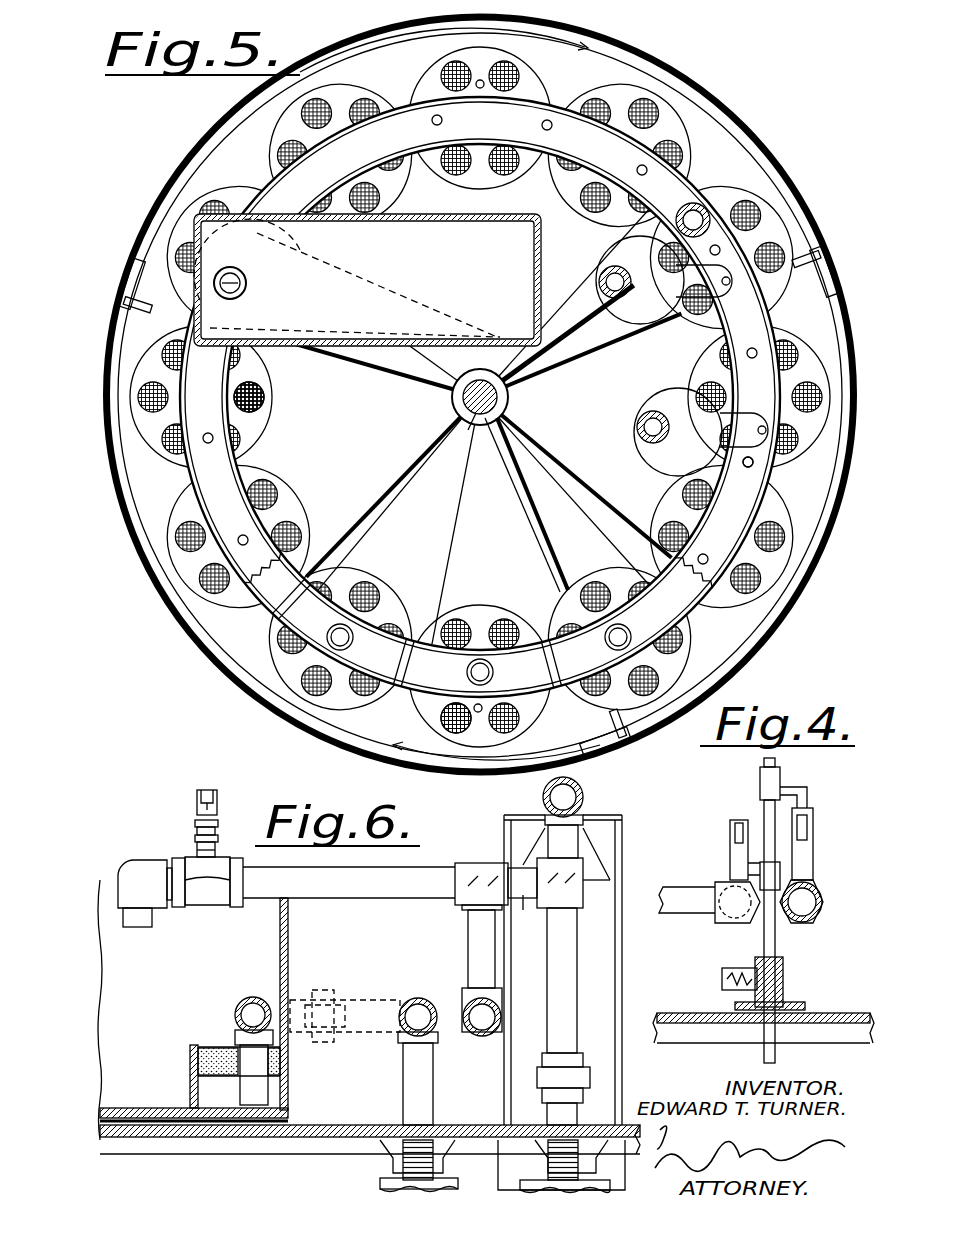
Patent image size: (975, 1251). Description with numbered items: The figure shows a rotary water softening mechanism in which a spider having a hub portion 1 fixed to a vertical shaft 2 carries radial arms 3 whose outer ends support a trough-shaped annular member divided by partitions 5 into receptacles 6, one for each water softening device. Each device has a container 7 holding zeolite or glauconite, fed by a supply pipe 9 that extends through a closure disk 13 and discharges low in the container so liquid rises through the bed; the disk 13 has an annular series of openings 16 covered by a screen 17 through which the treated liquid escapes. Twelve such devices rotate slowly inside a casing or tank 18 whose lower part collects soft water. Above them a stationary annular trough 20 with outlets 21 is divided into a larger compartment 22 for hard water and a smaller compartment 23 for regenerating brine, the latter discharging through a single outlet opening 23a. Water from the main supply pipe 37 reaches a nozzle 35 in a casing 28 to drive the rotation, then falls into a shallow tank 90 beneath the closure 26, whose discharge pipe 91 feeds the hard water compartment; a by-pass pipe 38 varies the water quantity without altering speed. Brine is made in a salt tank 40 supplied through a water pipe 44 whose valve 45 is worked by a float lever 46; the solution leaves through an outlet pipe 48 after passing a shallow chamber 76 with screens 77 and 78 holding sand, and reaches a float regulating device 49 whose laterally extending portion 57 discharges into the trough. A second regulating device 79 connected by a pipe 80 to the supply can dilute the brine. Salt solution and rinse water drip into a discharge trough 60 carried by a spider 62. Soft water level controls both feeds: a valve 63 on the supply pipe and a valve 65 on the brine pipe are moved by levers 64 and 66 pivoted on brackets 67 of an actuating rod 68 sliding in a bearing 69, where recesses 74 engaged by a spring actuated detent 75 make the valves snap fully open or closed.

In FIG. 5, the hub portion 1 is at (467, 433).
In FIG. 5, the vertical shaft 2 is at (509, 402).
In FIG. 5, the radial arms 3 is at (440, 362).
In FIG. 5, the partitions 5 is at (278, 604).
In FIG. 5, the receptacles 6 is at (480, 397).
In FIG. 5, the container 7 is at (445, 182).
In FIG. 5, the supply pipe 9 is at (482, 672).
In FIG. 5, the disk 13 is at (612, 215).
In FIG. 5, the openings 16 is at (575, 193).
In FIG. 5, the screen 17 is at (264, 394).
In FIG. 5, the casing or tank 18 is at (205, 152).
In FIG. 5, the annular trough 20 is at (752, 466).
In FIG. 5, the outlets 21 is at (443, 120).
In FIG. 5, the larger compartment 22 is at (728, 521).
In FIG. 5, the smaller compartment 23 is at (755, 338).
In FIG. 5, the single outlet opening 23a is at (756, 378).
In FIG. 6, the closure 26 is at (305, 1135).
In FIG. 4, the closure 26 is at (684, 1013).
In FIG. 6, the casing 28 is at (563, 970).
In FIG. 6, the nozzle 35 is at (595, 875).
In FIG. 6, the main supply pipe 37 is at (470, 922).
In FIG. 4, the main supply pipe 37 is at (826, 900).
In FIG. 5, the by-pass pipe 38 is at (697, 210).
In FIG. 6, the by-pass pipe 38 is at (584, 800).
In FIG. 6, the salt tank 40 is at (289, 948).
In FIG. 6, the water pipe 44 is at (140, 920).
In FIG. 6, the valve 45 is at (218, 905).
In FIG. 6, the lever 46 is at (207, 790).
In FIG. 5, the outlet pipe 48 is at (637, 432).
In FIG. 6, the outlet pipe 48 is at (262, 1092).
In FIG. 4, the outlet pipe 48 is at (692, 908).
In FIG. 5, the regulating device 49 is at (668, 468).
In FIG. 6, the regulating device 49 is at (386, 1176).
In FIG. 5, the laterally extending portion 57 is at (745, 418).
In FIG. 5, the discharge trough 60 is at (712, 330).
In FIG. 5, the spider 62 is at (540, 518).
In FIG. 4, the valve 63 is at (805, 885).
In FIG. 4, the lever 64 is at (802, 832).
In FIG. 4, the valve 65 is at (718, 880).
In FIG. 4, the lever 66 is at (733, 830).
In FIG. 4, the brackets 67 is at (798, 803).
In FIG. 4, the actuating rod 68 is at (776, 942).
In FIG. 4, the bearing 69 is at (783, 1004).
In FIG. 4, the recesses 74 is at (782, 975).
In FIG. 4, the spring actuated detent 75 is at (745, 968).
In FIG. 6, the shallow chamber 76 is at (200, 1092).
In FIG. 6, the screen 77 is at (218, 1046).
In FIG. 6, the screen 78 is at (223, 1077).
In FIG. 5, the second regulating device 79 is at (615, 312).
In FIG. 6, the second regulating device 79 is at (590, 1186).
In FIG. 5, the pipe 80 is at (629, 288).
In FIG. 6, the pipe 80 is at (565, 990).
In FIG. 5, the shallow tank 90 is at (265, 346).
In FIG. 6, the shallow tank 90 is at (561, 1165).
In FIG. 5, the discharge pipe 91 is at (233, 270).